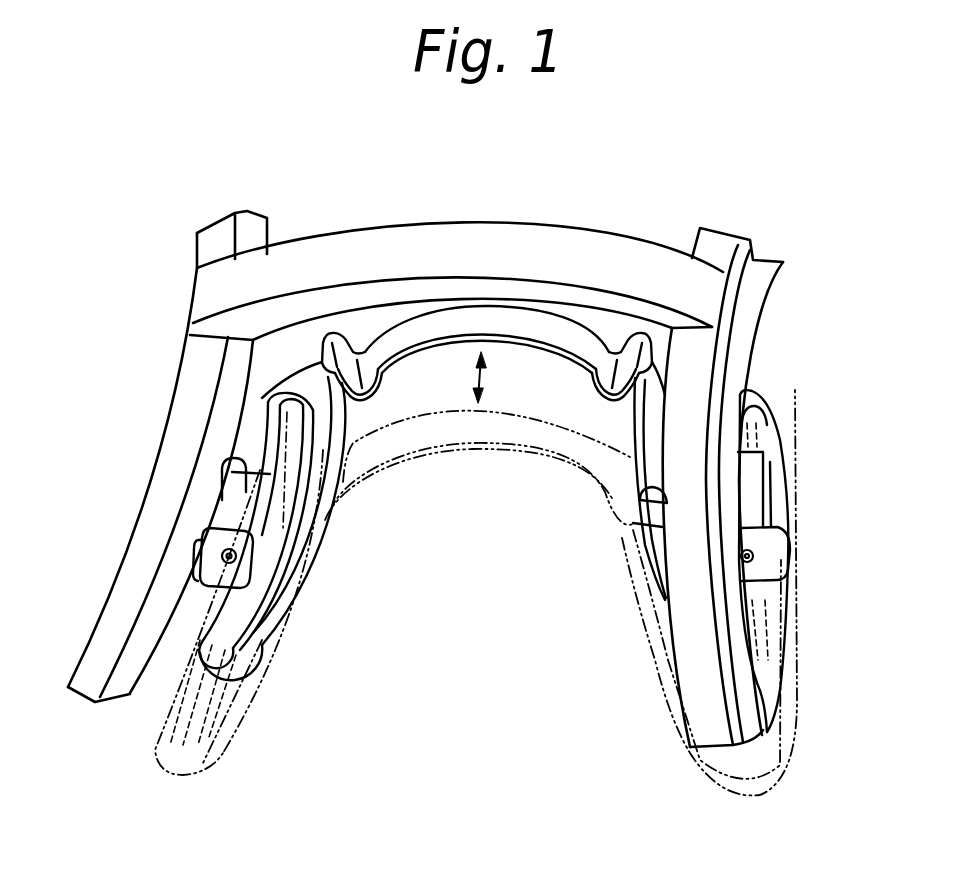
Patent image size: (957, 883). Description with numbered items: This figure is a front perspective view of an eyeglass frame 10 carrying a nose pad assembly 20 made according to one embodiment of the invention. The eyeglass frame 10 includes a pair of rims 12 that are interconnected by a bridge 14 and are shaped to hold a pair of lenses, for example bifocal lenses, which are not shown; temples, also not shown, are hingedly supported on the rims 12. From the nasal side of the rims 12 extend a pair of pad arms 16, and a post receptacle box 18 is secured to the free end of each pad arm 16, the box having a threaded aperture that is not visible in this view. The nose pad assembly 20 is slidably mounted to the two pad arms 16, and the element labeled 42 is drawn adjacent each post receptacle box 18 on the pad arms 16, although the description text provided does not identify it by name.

The eyeglass frame 10 is at (764, 208).
The rims 12 is at (195, 375).
The bridge 14 is at (368, 240).
The pad arms 16 is at (242, 491).
The post receptacle box 18 is at (207, 555).
The nose pad assembly 20 is at (349, 522).
The screw 42 is at (235, 553).